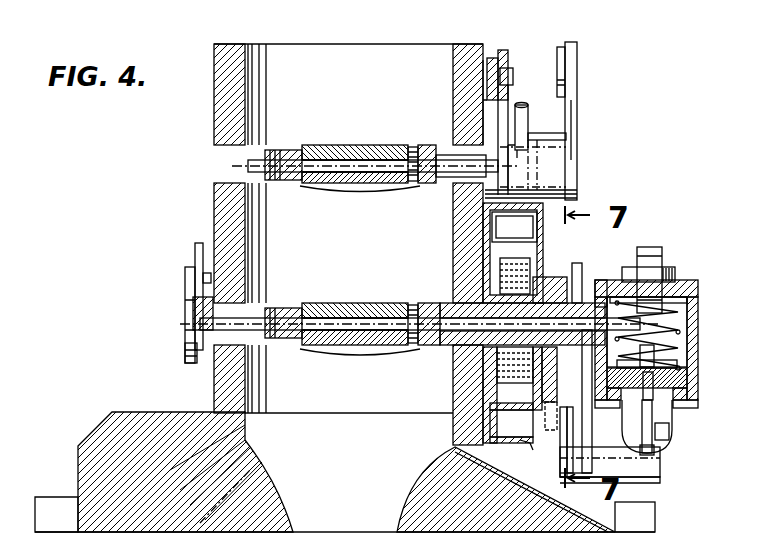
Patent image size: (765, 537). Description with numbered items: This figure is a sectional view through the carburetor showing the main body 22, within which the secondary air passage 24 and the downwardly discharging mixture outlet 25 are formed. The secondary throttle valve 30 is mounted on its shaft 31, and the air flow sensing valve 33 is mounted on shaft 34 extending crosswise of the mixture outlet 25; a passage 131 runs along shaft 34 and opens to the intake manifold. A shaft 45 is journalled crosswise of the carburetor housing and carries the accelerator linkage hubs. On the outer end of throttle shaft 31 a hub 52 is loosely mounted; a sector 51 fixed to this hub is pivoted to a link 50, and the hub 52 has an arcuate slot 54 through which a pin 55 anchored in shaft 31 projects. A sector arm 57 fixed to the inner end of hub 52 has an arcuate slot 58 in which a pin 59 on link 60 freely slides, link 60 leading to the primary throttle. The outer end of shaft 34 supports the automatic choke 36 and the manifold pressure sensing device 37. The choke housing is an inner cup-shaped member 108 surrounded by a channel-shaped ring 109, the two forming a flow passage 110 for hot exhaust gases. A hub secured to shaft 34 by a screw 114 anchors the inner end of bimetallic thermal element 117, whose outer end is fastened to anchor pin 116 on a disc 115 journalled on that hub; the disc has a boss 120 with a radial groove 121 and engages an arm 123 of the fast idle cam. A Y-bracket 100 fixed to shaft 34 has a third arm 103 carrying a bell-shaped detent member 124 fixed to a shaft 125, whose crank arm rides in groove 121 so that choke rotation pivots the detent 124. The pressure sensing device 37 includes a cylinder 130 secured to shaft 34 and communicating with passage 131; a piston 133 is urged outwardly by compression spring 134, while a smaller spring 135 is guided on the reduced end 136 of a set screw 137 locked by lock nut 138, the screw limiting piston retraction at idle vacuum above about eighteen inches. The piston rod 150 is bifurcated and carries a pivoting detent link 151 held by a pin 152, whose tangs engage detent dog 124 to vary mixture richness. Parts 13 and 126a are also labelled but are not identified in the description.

The main body 22 is at (214, 130).
The secondary air passage 24 is at (252, 115).
The secondary throttle valve 30 is at (330, 183).
The shaft 31 is at (272, 180).
The air flow sensing valve 33 is at (325, 303).
The shaft 34 is at (263, 303).
The passage 131 is at (428, 345).
The arm 123 is at (197, 298).
The shaft 45 is at (203, 345).
The link 60 is at (487, 78).
The sector arm 57 is at (504, 50).
The arcuate slot 58 is at (513, 75).
The pin 59 is at (510, 95).
The pin 55 is at (528, 118).
The arcuate slot 54 is at (518, 160).
The hub 52 is at (560, 138).
The link 50 is at (568, 42).
The sector 51 is at (577, 110).
The disc 115 is at (543, 230).
The anchor pin 116 is at (524, 252).
The bimetallic thermal element 117 is at (500, 258).
The rod 13 is at (580, 258).
The Y-bracket 100 is at (601, 280).
The manifold pressure sensing means 37 is at (707, 391).
The set screw 137 is at (655, 250).
The lock nut 138 is at (672, 276).
The reduced end 136 is at (670, 300).
The cylinder 130 is at (690, 312).
The compression spring 134 is at (690, 335).
The smaller compression spring 135 is at (690, 355).
The piston means 133 is at (690, 380).
The piston rod 150 is at (672, 418).
The pin 152 is at (668, 432).
The detent link 151 is at (654, 452).
The bell-shaped detent member 124 is at (657, 483).
The shaft 125 is at (635, 517).
The inner cup-shaped member 108 is at (483, 388).
The boss 120 is at (533, 393).
The channel-shaped ring 109 is at (490, 430).
The flow passage 110 is at (480, 444).
The screw 114 is at (592, 400).
The radial groove 121 is at (573, 430).
The plate 126a is at (560, 440).
The automatic choke 36 is at (520, 460).
The third arm 103 is at (565, 480).
The downwardly discharging outlet 25 is at (345, 472).